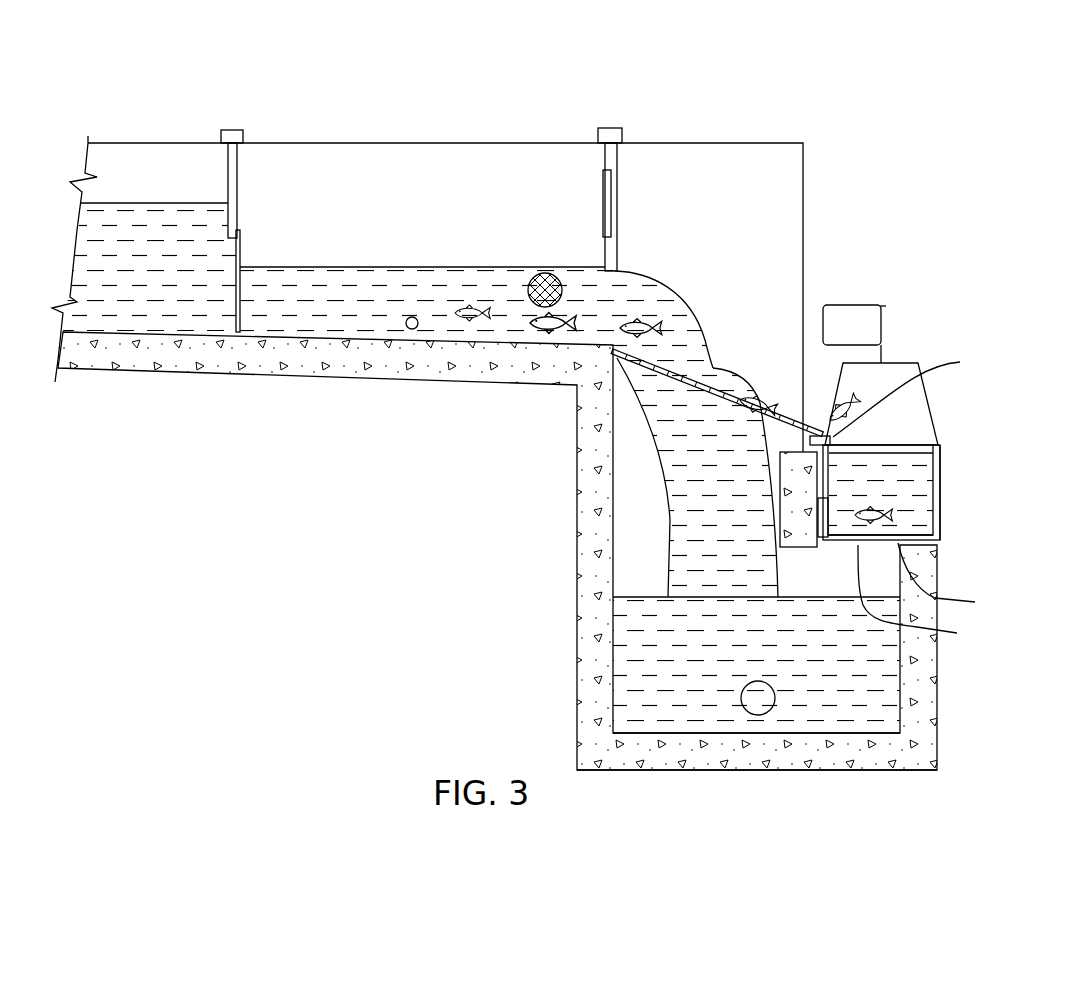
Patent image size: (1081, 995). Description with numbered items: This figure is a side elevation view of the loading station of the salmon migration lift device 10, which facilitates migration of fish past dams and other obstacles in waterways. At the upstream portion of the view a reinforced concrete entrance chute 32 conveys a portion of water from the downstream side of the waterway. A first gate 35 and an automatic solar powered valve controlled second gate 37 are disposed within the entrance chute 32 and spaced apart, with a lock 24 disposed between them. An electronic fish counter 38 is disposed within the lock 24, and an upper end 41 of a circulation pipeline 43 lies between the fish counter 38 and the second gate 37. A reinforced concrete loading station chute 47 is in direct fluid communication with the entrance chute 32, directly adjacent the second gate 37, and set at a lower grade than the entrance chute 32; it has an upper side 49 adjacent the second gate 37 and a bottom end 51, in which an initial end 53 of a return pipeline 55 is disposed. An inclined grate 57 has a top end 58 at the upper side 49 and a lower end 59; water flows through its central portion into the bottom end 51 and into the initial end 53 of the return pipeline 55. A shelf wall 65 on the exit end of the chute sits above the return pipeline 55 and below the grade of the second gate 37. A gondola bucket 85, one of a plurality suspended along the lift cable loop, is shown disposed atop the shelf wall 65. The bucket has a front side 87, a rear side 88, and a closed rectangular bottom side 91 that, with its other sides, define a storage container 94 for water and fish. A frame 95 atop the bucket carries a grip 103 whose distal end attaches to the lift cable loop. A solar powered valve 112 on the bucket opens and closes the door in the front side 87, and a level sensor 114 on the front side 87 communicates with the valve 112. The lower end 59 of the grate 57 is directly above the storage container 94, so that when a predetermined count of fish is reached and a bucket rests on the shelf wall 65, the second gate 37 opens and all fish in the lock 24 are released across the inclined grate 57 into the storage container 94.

The salmon migration lift device 10 is at (870, 137).
The lock 24 is at (345, 378).
The entrance chute 32 is at (105, 368).
The first gate 35 is at (240, 130).
The second gate 37 is at (612, 128).
The electronic fish counter 38 is at (412, 330).
The upper end of circulation pipeline 41 is at (530, 312).
The circulation pipeline 43 is at (547, 275).
The loading station chute 47 is at (727, 173).
The upper side of loading station chute 49 is at (620, 290).
The bottom end of loading station chute 51 is at (800, 733).
The initial end of return pipeline 53 is at (747, 705).
The return pipeline 55 is at (755, 717).
The inclined grate 57 is at (697, 377).
The top end of inclined grate 58 is at (613, 352).
The lower end of inclined grate 59 is at (820, 437).
The shelf wall 65 is at (924, 597).
The gondola bucket 85 is at (945, 547).
The front side 87 is at (823, 472).
The rear side 88 is at (940, 512).
The bottom side 91 is at (956, 581).
The storage container 94 is at (933, 522).
The frame 95 is at (945, 400).
The grip 103 is at (843, 305).
The solar powered valve 112 is at (823, 500).
The level sensor 114 is at (920, 389).